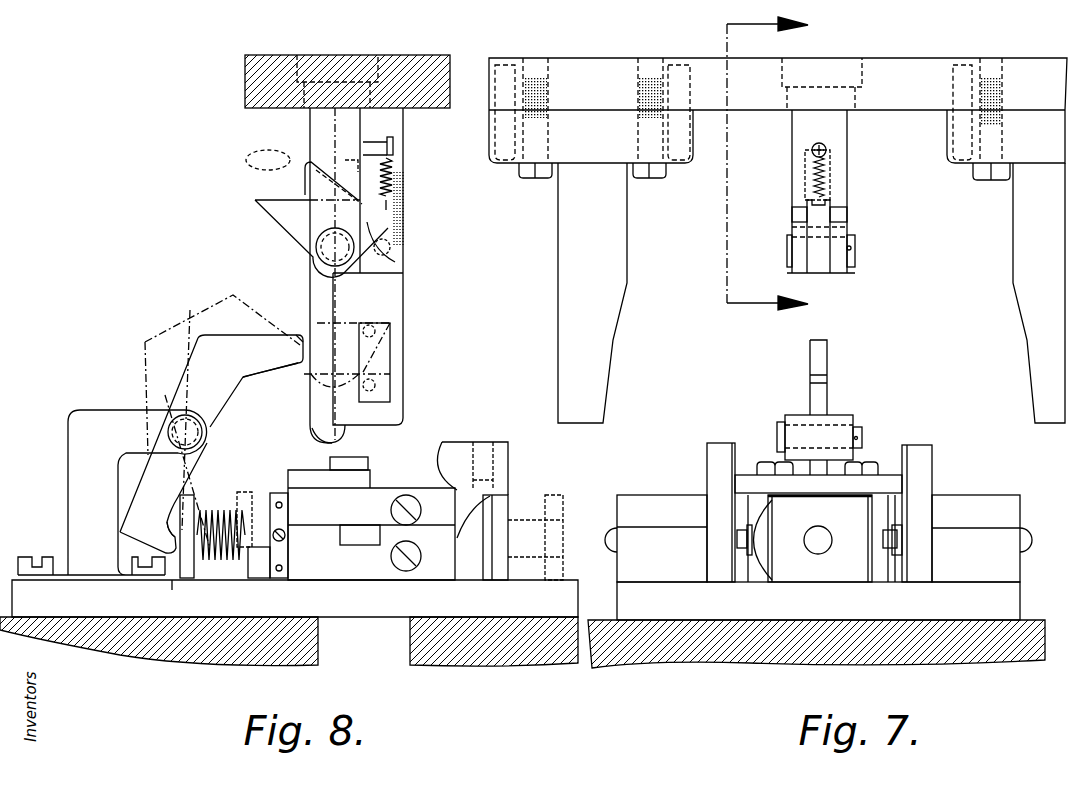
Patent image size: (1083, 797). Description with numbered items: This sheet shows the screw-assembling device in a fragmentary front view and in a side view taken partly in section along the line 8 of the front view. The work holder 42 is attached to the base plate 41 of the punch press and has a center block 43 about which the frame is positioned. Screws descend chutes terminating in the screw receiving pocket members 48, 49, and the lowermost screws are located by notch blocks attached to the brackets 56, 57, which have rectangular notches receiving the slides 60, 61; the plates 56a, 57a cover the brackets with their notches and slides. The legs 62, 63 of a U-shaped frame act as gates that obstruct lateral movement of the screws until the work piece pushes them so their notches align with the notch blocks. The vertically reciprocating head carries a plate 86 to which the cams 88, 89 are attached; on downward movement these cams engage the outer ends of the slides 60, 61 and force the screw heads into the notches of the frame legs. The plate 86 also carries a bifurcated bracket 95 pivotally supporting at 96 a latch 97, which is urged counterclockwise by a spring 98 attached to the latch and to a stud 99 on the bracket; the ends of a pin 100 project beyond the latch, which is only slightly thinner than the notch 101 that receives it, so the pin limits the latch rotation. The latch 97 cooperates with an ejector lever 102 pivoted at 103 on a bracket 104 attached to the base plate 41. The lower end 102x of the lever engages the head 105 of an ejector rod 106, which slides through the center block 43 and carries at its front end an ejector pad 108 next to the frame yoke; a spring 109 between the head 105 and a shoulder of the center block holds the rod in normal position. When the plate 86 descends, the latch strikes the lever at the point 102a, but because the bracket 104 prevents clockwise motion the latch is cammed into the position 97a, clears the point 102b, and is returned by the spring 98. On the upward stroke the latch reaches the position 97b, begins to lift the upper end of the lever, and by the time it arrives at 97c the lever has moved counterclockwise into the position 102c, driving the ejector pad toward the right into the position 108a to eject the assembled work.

In FIG. 7, the section line 8— 8 is at (798, 288).
In FIG. 8, the base plate 41 is at (92, 648).
In FIG. 7, the base plate 41 is at (672, 640).
In FIG. 8, the work holder 42 is at (480, 672).
In FIG. 7, the work holder 42 is at (995, 672).
In FIG. 7, the center block 43 is at (757, 582).
In FIG. 7, the screw receiving pocket member 48 is at (916, 455).
In FIG. 8, the screw receiving pocket member 49 is at (462, 452).
In FIG. 7, the screw receiving pocket member 49 is at (713, 455).
In FIG. 7, the bracket 56 is at (952, 570).
In FIG. 7, the cover plate 56a is at (975, 505).
In FIG. 8, the bracket 57 is at (323, 562).
In FIG. 7, the bracket 57 is at (680, 570).
In FIG. 8, the cover plate 57a is at (320, 503).
In FIG. 7, the cover plate 57a is at (676, 505).
In FIG. 7, the slide 60 is at (1028, 536).
In FIG. 8, the slide 61 is at (365, 530).
In FIG. 7, the slide 61 is at (604, 535).
In FIG. 7, the leg of U-shaped gate frame 62 is at (897, 572).
In FIG. 7, the leg of U-shaped gate frame 63 is at (742, 572).
In FIG. 8, the plate 86 is at (245, 68).
In FIG. 7, the plate 86 is at (580, 70).
In FIG. 8, the cam 88 is at (392, 300).
In FIG. 7, the cam 88 is at (1027, 320).
In FIG. 7, the cam 89 is at (572, 308).
In FIG. 8, the bifurcated bracket 95 is at (313, 125).
In FIG. 7, the bifurcated bracket 95 is at (840, 150).
In FIG. 8, the pivot 96 is at (316, 247).
In FIG. 7, the pivot 96 is at (855, 258).
In FIG. 8, the latch 97 is at (268, 207).
In FIG. 7, the latch 97 is at (818, 250).
In FIG. 8, the cammed latch position 97a is at (300, 165).
In FIG. 8, the latch lifting position 97b is at (380, 425).
In FIG. 8, the latch final position 97c is at (392, 340).
In FIG. 8, the spring 98 is at (396, 182).
In FIG. 7, the spring 98 is at (825, 177).
In FIG. 8, the stud 99 is at (394, 141).
In FIG. 7, the stud 99 is at (827, 147).
In FIG. 8, the pin 100 is at (391, 255).
In FIG. 7, the pin 100 is at (792, 218).
In FIG. 8, the notch 101 is at (305, 155).
In FIG. 7, the notch 101 is at (832, 229).
In FIG. 8, the ejector lever 102 is at (270, 283).
In FIG. 7, the ejector lever 102 is at (826, 405).
In FIG. 8, the striking point of lever 102a is at (302, 336).
In FIG. 8, the lever point 102b is at (296, 366).
In FIG. 8, the lever ejecting position 102c is at (146, 352).
In FIG. 8, the lower end of lever 102x is at (168, 537).
In FIG. 8, the pivot 103 is at (188, 432).
In FIG. 7, the pivot 103 is at (862, 436).
In FIG. 8, the bracket 104 is at (80, 452).
In FIG. 7, the bracket 104 is at (852, 422).
In FIG. 8, the head of ejector rod 105 is at (186, 578).
In FIG. 8, the ejector rod 106 is at (258, 520).
In FIG. 8, the ejector pad 108 is at (500, 500).
In FIG. 7, the ejector pad 108 is at (802, 572).
In FIG. 8, the ejector pad ejecting position 108a is at (553, 492).
In FIG. 8, the spring 109 is at (225, 515).